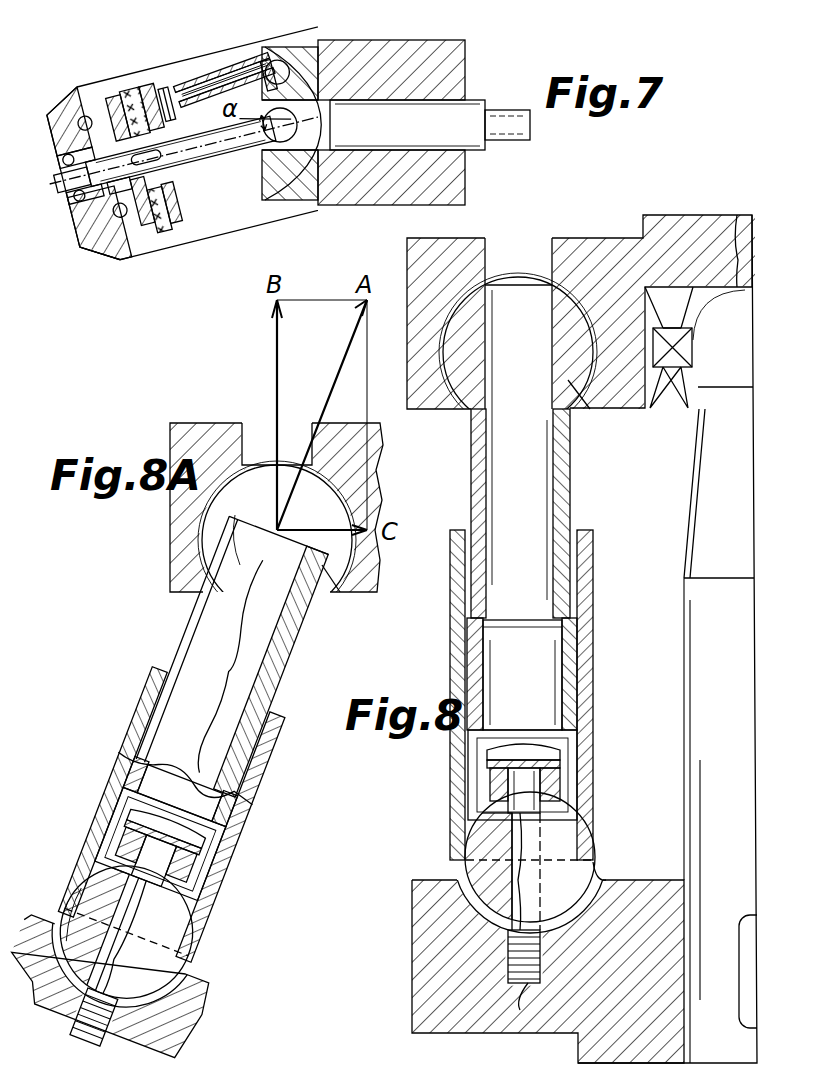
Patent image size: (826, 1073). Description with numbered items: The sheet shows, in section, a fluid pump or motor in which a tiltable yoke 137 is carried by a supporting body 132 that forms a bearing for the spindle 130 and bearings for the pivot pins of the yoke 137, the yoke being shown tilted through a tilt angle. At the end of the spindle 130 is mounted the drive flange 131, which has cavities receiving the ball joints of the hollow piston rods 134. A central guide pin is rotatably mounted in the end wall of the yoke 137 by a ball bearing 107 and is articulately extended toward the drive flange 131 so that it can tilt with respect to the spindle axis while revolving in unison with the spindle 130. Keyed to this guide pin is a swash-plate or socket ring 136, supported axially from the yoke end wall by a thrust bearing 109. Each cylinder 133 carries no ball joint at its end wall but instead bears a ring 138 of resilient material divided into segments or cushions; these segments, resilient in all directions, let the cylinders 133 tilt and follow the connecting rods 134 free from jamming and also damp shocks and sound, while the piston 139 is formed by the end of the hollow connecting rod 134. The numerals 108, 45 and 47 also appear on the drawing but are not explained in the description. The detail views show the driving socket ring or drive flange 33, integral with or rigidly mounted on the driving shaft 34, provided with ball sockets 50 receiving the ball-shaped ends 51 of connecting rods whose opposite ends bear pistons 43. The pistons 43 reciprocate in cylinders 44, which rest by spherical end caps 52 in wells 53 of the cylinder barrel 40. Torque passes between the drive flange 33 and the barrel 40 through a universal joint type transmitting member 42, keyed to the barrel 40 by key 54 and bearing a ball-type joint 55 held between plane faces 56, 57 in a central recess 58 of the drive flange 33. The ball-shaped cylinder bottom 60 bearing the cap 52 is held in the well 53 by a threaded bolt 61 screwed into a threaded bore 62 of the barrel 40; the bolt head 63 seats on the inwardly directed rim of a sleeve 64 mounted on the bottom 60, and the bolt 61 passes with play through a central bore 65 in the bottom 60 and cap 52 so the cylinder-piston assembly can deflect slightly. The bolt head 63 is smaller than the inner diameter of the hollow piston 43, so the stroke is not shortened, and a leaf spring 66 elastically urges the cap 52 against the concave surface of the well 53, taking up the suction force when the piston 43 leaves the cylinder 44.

In FIG. 7, the ball bearing 107 is at (97, 247).
In FIG. 7, the shaft slot 108 is at (160, 158).
In FIG. 7, the thrust bearing 109 is at (60, 168).
In FIG. 7, the spindle 130 is at (477, 115).
In FIG. 7, the drive flange 131 is at (296, 50).
In FIG. 7, the supporting body 132 is at (462, 73).
In FIG. 7, the cylinder 133 is at (157, 83).
In FIG. 7, the hollow piston rod 134 is at (235, 65).
In FIG. 7, the swash-plate or socket ring 136 is at (177, 182).
In FIG. 7, the tiltable yoke 137 is at (68, 100).
In FIG. 7, the ring of resilient material 138 is at (110, 90).
In FIG. 7, the piston 139 is at (187, 77).
In FIG. 8, the driving socket ring 33 is at (410, 246).
In FIG. 8A, the driving socket ring 33 is at (170, 540).
In FIG. 8, the driving shaft 34 is at (705, 222).
In FIG. 8, the cylinder barrel 40 is at (420, 985).
In FIG. 8A, the cylinder barrel 40 is at (198, 999).
In FIG. 8, the universal joint type transmitting member 42 is at (685, 700).
In FIG. 8, the piston 43 is at (572, 662).
In FIG. 8A, the piston 43 is at (215, 806).
In FIG. 8, the cylinder 44 is at (455, 642).
In FIG. 8A, the cylinder 44 is at (155, 668).
In FIG. 8, the piston rod 45 is at (478, 480).
In FIG. 8A, the piston rod 45 is at (205, 612).
In FIG. 8, the inner rod 47 is at (500, 447).
In FIG. 8A, the inner rod 47 is at (262, 632).
In FIG. 8, the ball socket 50 is at (447, 409).
In FIG. 8A, the ball socket 50 is at (277, 540).
In FIG. 8, the ball-shaped end 51 is at (583, 409).
In FIG. 8A, the ball-shaped end 51 is at (320, 584).
In FIG. 8, the spherical end cap 52 is at (470, 862).
In FIG. 8A, the spherical end cap 52 is at (58, 918).
In FIG. 8, the well 53 is at (600, 882).
In FIG. 8, the key 54 is at (742, 975).
In FIG. 8, the ball-type joint 55 is at (672, 395).
In FIG. 8, the plane face 56 is at (667, 292).
In FIG. 8, the plane face 57 is at (668, 368).
In FIG. 8, the central recess 58 is at (737, 215).
In FIG. 8, the cylinder bottom 60 is at (475, 826).
In FIG. 8, the threaded bolt 61 is at (507, 938).
In FIG. 8, the threaded bore 62 is at (530, 985).
In FIG. 8, the bolt head 63 is at (556, 751).
In FIG. 8, the sleeve 64 is at (555, 779).
In FIG. 8, the central bore 65 is at (512, 843).
In FIG. 8, the leaf spring 66 is at (495, 763).